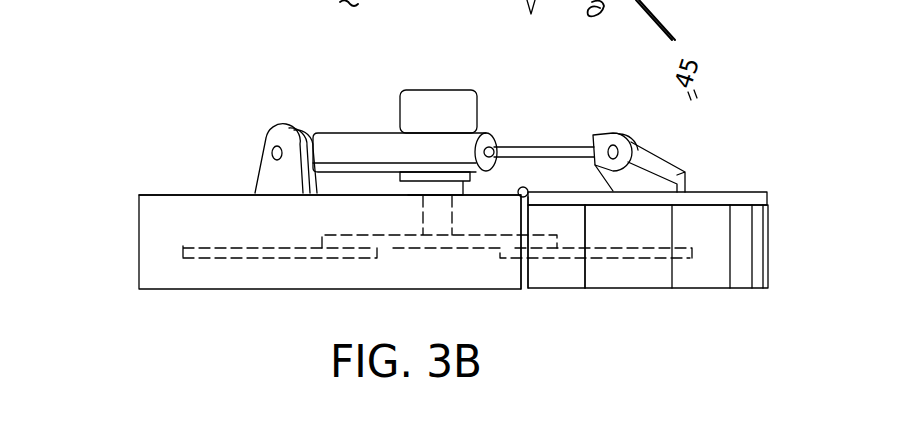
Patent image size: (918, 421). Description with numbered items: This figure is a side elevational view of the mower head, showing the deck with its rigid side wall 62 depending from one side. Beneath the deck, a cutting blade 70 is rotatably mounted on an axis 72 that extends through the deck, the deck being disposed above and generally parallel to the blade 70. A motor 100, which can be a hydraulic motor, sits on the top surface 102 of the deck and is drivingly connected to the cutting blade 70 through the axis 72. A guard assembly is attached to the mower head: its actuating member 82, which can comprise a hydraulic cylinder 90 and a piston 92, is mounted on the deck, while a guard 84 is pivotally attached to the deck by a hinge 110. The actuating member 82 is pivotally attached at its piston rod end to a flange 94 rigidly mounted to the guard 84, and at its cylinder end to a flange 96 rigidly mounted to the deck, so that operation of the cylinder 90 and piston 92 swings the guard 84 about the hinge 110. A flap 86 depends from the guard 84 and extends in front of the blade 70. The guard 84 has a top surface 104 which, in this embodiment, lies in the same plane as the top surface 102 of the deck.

The side wall 62 is at (153, 258).
The cutting blade 70 is at (255, 260).
The axis 72 is at (427, 222).
The actuating member 82 is at (452, 145).
The guard 84 is at (707, 215).
The flap 86 is at (603, 273).
The hydraulic cylinder 90 is at (345, 142).
The piston 92 is at (527, 152).
The flange 94 is at (658, 178).
The flange 96 is at (264, 163).
The motor 100 is at (417, 110).
The top surface 102 is at (165, 193).
The top surface 104 is at (740, 190).
The hinge 110 is at (527, 188).